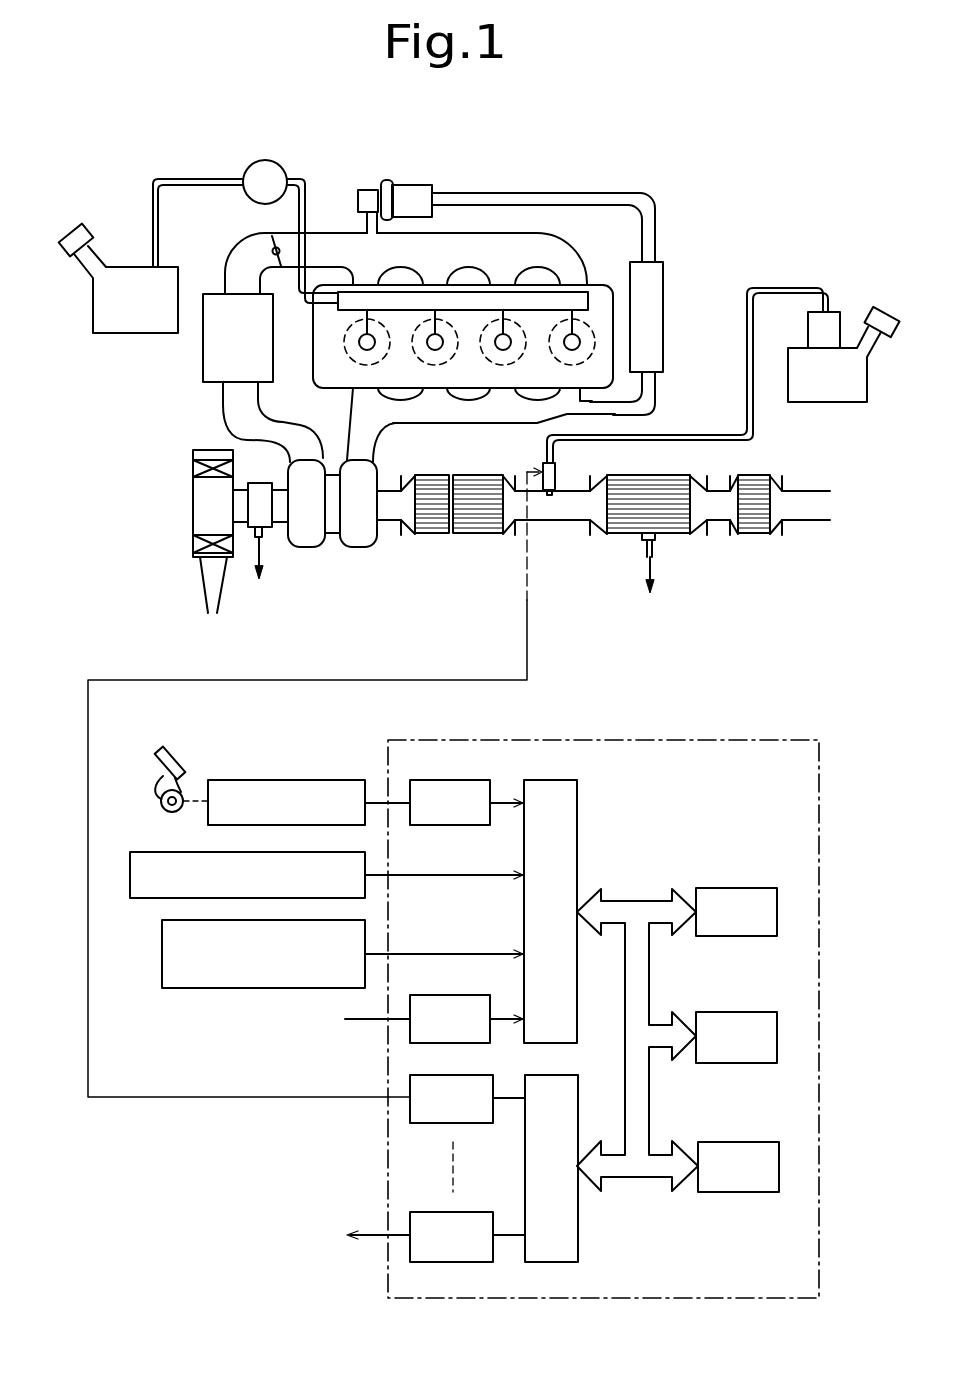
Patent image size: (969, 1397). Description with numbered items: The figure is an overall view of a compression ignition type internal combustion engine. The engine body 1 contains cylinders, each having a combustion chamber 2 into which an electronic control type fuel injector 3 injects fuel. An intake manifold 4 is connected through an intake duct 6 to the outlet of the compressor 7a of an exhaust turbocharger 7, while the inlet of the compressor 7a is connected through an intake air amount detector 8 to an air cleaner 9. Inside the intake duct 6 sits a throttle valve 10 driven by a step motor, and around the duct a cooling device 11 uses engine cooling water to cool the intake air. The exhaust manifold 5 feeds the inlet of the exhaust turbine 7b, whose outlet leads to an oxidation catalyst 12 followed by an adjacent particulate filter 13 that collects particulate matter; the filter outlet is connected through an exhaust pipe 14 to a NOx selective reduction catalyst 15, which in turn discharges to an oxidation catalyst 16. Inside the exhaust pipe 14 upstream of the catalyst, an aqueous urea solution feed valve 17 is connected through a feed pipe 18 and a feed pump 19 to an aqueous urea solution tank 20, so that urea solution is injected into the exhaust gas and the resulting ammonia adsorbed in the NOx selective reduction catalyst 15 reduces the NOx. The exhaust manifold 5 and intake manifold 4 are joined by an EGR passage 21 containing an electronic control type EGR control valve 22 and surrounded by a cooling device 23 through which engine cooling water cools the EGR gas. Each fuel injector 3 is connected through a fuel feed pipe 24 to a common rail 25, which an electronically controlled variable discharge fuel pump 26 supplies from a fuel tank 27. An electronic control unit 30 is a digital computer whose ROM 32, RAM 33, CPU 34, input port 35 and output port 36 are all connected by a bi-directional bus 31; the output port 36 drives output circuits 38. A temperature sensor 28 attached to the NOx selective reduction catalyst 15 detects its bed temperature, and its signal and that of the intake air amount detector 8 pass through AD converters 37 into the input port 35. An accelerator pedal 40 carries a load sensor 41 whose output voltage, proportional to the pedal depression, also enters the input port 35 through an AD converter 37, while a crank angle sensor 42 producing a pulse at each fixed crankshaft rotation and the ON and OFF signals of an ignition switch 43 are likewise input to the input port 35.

The engine body 1 is at (617, 272).
The combustion chamber 2 is at (357, 360).
The fuel injector 3 is at (346, 340).
The intake manifold 4 is at (553, 245).
The exhaust manifold 5 is at (455, 413).
The intake duct 6 is at (232, 272).
The exhaust turbocharger 7 is at (304, 517).
The compressor 7a is at (307, 538).
The exhaust turbine 7b is at (362, 538).
The intake air amount detector 8 is at (252, 528).
The air cleaner 9 is at (200, 505).
The throttle valve 10 is at (270, 236).
The cooling device 11 is at (206, 362).
The oxidation catalyst 12 is at (432, 524).
The particulate filter 13 is at (480, 526).
The exhaust pipe 14 is at (556, 521).
The NOx selective reduction catalyst 15 is at (668, 526).
The oxidation catalyst 16 is at (755, 528).
The aqueous urea solution feed valve 17 is at (556, 478).
The feed pipe 18 is at (756, 428).
The feed pump 19 is at (838, 312).
The aqueous urea solution tank 20 is at (843, 397).
The EGR passage 21 is at (521, 193).
The EGR control valve 22 is at (370, 192).
The cooling device 23 is at (663, 315).
The fuel feed pipe 24 is at (352, 328).
The common rail 25 is at (477, 297).
The fuel pump 26 is at (252, 164).
The fuel tank 27 is at (118, 328).
The temperature sensor 28 is at (640, 551).
The electronic control unit 30 is at (828, 775).
The bi-directional bus 31 is at (636, 901).
The ROM 32 is at (740, 888).
The RAM 33 is at (740, 1012).
The CPU 34 is at (742, 1142).
The input port 35 is at (578, 790).
The output port 36 is at (578, 1240).
The AD converter 37 is at (455, 780).
The drive circuit 38 is at (410, 1213).
The accelerator pedal 40 is at (176, 752).
The load sensor 41 is at (313, 780).
The crank angle sensor 42 is at (153, 852).
The ignition switch 43 is at (197, 988).